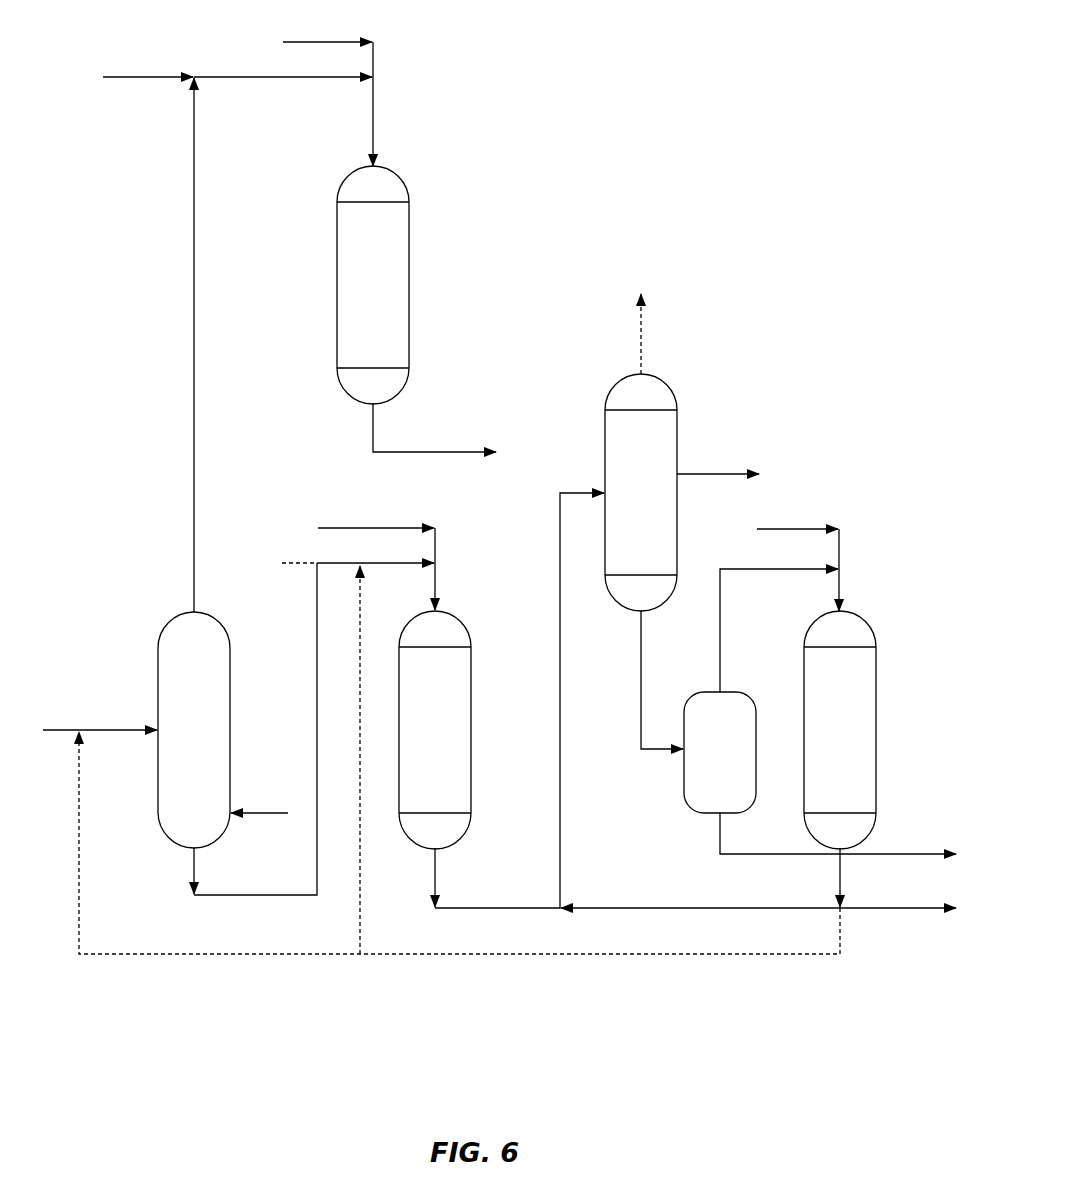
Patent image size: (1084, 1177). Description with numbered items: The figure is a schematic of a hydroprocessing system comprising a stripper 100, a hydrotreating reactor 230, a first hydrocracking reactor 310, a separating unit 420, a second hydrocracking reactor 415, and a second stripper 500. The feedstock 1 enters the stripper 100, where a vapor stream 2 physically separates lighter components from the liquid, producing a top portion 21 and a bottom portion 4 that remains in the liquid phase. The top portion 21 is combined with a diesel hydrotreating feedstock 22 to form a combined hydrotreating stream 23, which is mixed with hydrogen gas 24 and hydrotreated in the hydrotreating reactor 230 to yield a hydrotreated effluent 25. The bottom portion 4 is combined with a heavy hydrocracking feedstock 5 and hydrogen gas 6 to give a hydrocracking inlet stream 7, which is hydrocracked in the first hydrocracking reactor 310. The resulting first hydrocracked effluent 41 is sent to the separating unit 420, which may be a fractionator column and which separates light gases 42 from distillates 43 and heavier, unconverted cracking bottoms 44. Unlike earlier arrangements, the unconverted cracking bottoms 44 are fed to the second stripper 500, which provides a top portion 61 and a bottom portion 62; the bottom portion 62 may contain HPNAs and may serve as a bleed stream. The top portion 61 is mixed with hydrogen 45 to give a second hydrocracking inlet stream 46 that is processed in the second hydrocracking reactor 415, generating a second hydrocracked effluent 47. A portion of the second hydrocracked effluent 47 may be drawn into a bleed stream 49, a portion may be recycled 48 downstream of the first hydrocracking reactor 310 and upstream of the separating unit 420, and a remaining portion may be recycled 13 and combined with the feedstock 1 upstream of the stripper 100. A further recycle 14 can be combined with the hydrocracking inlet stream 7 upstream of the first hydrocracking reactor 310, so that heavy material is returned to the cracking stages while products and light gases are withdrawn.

The feedstock 1 is at (64, 729).
The vapor stream 2 is at (281, 811).
The bottom portion 4 is at (192, 880).
The heavy hydrocracking feedstock 5 is at (292, 566).
The hydrogen gas 6 is at (379, 527).
The hydrocracking inlet stream 7 is at (436, 578).
The recycle stream 13 is at (265, 953).
The recycle stream 14 is at (360, 905).
The top portion 21 is at (194, 586).
The diesel hydrotreating feedstock 22 is at (158, 77).
The combined hydrotreating stream 23 is at (270, 78).
The hydrogen gas 24 is at (332, 42).
The hydrotreated effluent 25 is at (474, 450).
The first hydrocracked effluent 41 is at (510, 906).
The light gases 42 is at (642, 342).
The distillates 43 is at (738, 473).
The unconverted cracking bottoms 44 is at (642, 669).
The hydrogen 45 is at (808, 527).
The second hydrocracking inlet stream 46 is at (840, 578).
The second hydrocracked effluent 47 is at (838, 879).
The recycle stream 48 is at (753, 906).
The bleed stream 49 is at (918, 906).
The top portion 61 is at (752, 570).
The bottom portion 62 is at (770, 853).
The stripper 100 is at (194, 730).
The hydrotreating reactor 230 is at (373, 285).
The first hydrocracking reactor 310 is at (435, 730).
The second hydrocracking reactor 415 is at (840, 730).
The separating unit 420 is at (641, 492).
The second stripper 500 is at (720, 752).